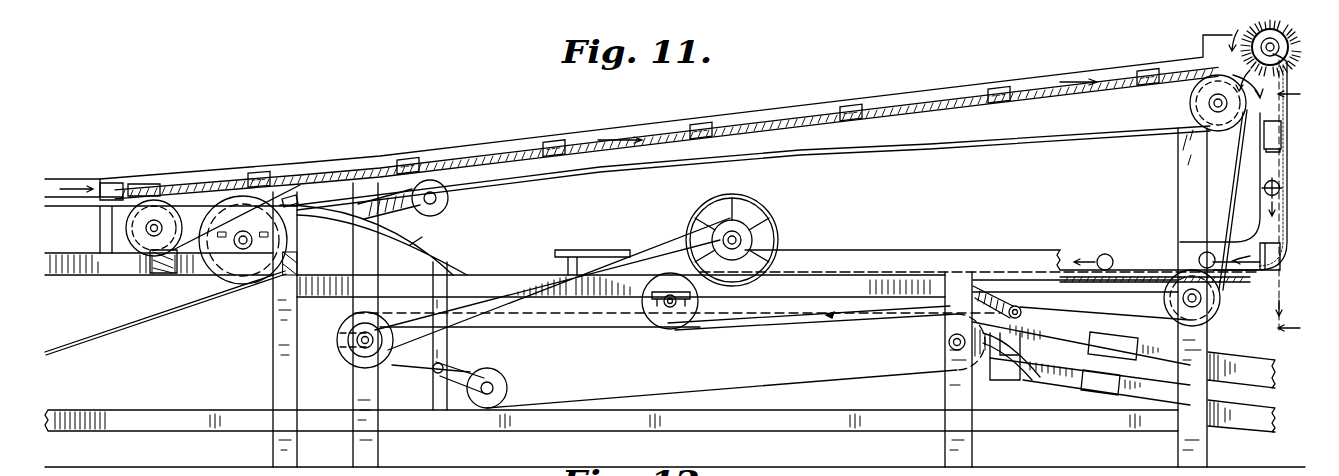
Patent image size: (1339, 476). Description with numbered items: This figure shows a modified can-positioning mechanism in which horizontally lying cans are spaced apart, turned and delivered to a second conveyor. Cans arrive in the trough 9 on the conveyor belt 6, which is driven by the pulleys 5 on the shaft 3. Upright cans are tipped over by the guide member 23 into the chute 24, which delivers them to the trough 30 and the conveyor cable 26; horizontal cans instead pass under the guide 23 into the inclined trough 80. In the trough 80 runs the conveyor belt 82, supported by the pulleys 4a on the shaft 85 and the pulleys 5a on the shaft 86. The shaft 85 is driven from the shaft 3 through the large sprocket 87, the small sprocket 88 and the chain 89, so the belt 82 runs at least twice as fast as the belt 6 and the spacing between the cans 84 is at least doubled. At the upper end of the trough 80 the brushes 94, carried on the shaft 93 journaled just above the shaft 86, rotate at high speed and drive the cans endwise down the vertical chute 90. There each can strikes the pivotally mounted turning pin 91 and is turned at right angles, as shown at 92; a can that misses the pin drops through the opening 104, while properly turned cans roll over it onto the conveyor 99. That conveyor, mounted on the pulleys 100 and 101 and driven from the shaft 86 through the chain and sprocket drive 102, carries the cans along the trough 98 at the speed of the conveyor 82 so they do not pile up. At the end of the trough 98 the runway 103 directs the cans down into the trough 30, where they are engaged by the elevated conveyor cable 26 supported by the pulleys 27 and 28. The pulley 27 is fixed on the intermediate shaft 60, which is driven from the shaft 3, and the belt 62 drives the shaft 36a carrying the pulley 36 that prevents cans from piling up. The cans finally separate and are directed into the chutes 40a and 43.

The shaft 3 is at (246, 247).
The pulleys 4a is at (127, 233).
The pulleys 5 is at (220, 278).
The pulleys 5a is at (1160, 118).
The conveyor belt 6 is at (120, 330).
The trough 9 is at (84, 180).
The guide member 23 is at (150, 178).
The chute 24 is at (310, 207).
The second conveyor cable 26 is at (592, 317).
The pulley 27 is at (350, 358).
The pulley 28 is at (950, 342).
The trough 30 is at (618, 300).
The pulley 36 is at (745, 236).
The shaft 36a is at (814, 230).
The chute 40a is at (1081, 325).
The chute 43 is at (1086, 369).
The intermediate shaft 60 is at (365, 345).
The belt 62 is at (552, 276).
The trough 80 is at (890, 100).
The conveyor belt 82 is at (933, 107).
The cans 84 is at (840, 108).
The shaft 85 is at (207, 160).
The shaft 86 is at (1215, 106).
The sprocket 87 is at (350, 262).
The sprocket 88 is at (207, 160).
The chain 89 is at (213, 215).
The vertical chute 90 is at (1288, 127).
The turning pin 91 is at (1280, 149).
The turned can 92 is at (1283, 188).
The shaft 93 is at (1285, 46).
The brush 94 is at (1298, 195).
The trough 98 is at (1040, 258).
The conveyor 99 is at (829, 266).
The pulley 100 is at (680, 320).
The pulley 101 is at (1280, 312).
The chain and sprocket drive 102 is at (1240, 200).
The runway 103 is at (606, 233).
The opening 104 is at (1283, 244).